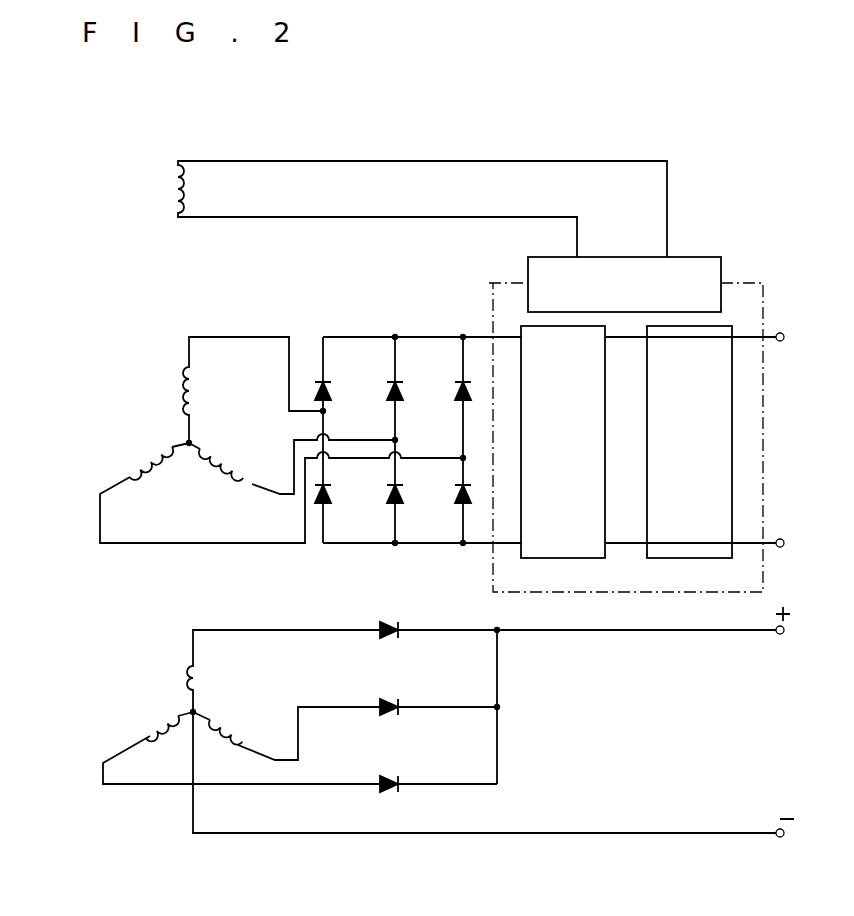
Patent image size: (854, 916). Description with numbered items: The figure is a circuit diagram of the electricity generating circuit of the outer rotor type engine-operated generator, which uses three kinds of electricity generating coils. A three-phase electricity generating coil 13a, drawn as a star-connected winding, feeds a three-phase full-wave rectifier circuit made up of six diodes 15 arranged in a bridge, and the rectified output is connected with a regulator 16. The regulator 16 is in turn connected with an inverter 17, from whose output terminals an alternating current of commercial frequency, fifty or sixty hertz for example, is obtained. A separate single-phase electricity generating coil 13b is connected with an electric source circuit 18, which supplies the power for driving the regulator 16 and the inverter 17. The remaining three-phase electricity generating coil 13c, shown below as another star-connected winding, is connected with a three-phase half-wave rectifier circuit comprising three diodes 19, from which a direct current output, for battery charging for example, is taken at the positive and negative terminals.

The 3-phase electricity generating coil 13a is at (181, 390).
The single phase electricity generating coil 13b is at (178, 192).
The 3-phase electricity generating coil 13c is at (186, 672).
The diodes 15 is at (388, 393).
The regulator 16 is at (560, 558).
The inverter 17 is at (695, 558).
The electric source circuit 18 is at (624, 257).
The diodes 19 is at (392, 700).